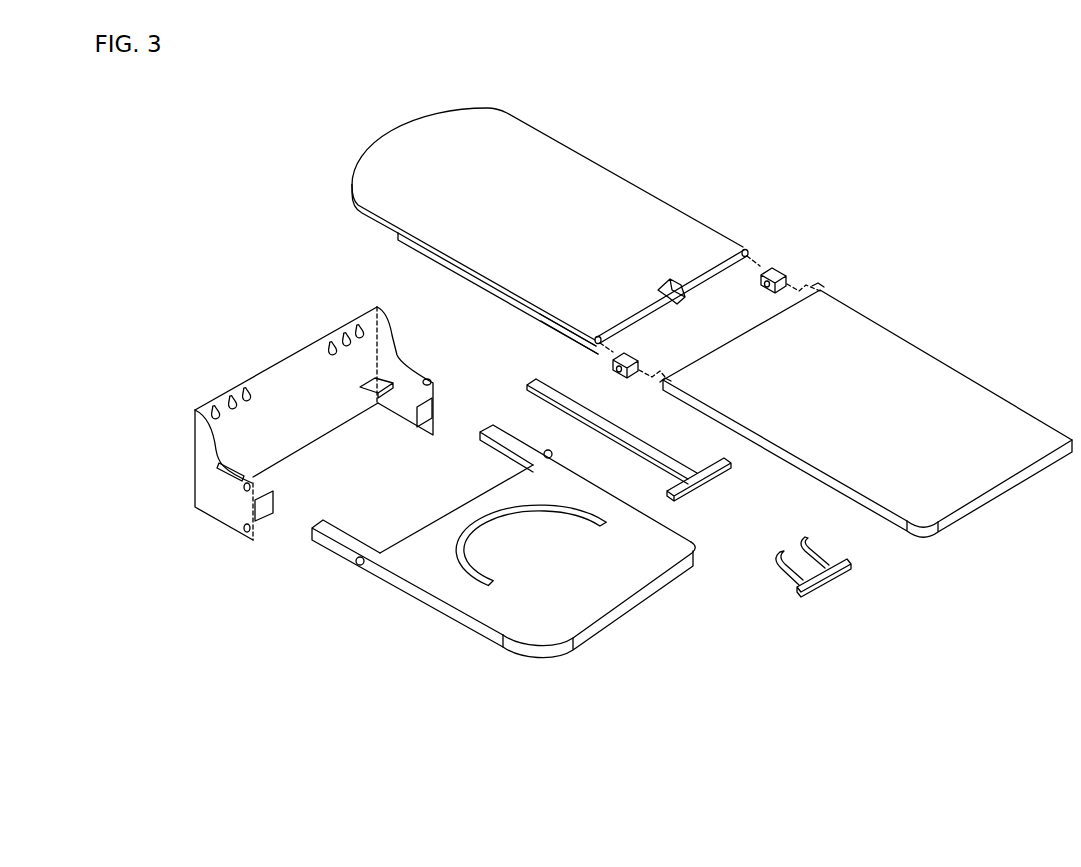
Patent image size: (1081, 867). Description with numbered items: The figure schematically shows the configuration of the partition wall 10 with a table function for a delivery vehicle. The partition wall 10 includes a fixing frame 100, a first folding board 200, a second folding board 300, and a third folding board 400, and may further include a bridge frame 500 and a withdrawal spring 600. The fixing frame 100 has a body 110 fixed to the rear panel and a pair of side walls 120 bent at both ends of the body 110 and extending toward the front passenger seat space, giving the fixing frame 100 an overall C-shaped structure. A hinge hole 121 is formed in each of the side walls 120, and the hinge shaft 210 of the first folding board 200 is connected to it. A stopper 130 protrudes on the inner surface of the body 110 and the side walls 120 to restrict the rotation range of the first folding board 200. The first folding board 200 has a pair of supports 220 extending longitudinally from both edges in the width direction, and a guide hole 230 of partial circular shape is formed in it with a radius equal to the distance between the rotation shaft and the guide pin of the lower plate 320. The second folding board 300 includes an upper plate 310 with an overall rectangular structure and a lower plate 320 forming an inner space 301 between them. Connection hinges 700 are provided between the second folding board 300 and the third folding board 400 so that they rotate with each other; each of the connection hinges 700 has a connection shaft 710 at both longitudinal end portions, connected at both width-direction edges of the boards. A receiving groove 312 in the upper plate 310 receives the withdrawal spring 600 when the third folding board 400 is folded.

The partition wall 10 is at (228, 104).
The fixing frame 100 is at (252, 364).
The body 110 is at (303, 360).
The side walls 120 is at (386, 324).
The hinge hole 121 is at (431, 381).
The stopper 130 is at (373, 376).
The first folding board 200 is at (672, 600).
The hinge shaft 210 is at (547, 450).
The supports 220 is at (490, 443).
The guide hole 230 is at (457, 563).
The second folding board 300 is at (668, 188).
The inner space 301 is at (554, 327).
The upper plate 310 is at (558, 153).
The receiving groove 312 is at (684, 296).
The lower plate 320 is at (555, 332).
The third folding board 400 is at (1022, 392).
The bridge frame 500 is at (724, 483).
The withdrawal spring 600 is at (843, 576).
The connection hinges 700 is at (766, 257).
The connection shaft 710 is at (777, 281).